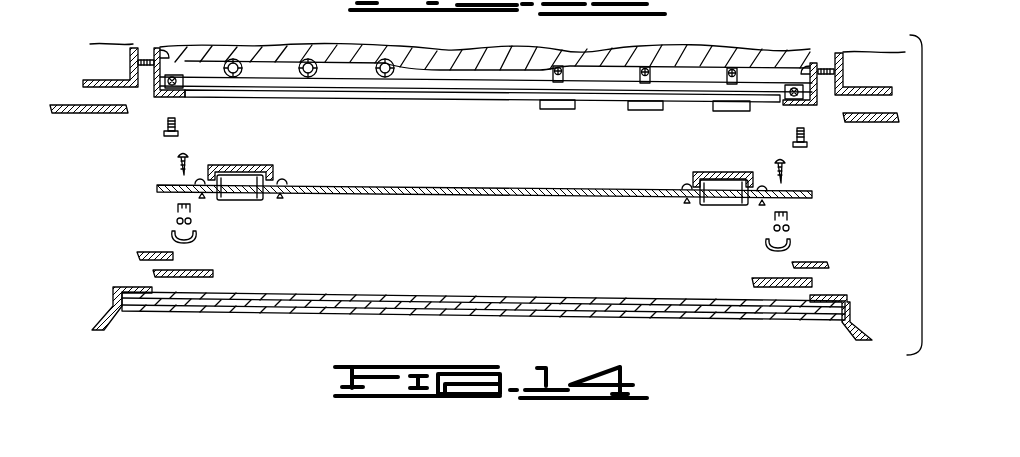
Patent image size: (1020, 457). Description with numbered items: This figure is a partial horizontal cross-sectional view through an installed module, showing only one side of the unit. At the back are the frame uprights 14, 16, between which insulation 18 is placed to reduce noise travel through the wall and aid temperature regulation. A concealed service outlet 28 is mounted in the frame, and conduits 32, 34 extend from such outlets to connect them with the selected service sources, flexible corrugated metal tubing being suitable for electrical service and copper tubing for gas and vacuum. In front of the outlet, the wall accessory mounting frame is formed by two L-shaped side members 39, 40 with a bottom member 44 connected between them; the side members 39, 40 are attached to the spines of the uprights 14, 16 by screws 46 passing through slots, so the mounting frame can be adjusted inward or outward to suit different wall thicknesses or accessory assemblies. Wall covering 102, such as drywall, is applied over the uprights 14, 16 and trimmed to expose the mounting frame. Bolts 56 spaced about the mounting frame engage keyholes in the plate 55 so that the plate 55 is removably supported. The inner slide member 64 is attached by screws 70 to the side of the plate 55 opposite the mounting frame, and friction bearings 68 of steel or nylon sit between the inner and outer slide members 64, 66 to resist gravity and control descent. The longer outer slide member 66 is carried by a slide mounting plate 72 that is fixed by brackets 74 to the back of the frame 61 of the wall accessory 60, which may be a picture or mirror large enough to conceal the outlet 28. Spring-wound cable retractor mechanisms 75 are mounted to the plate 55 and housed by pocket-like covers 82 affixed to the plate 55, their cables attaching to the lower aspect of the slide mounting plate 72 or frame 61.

The upright 14 is at (133, 48).
The upright 16 is at (840, 53).
The insulation 18 is at (713, 56).
The concealed service outlet 28 is at (645, 111).
The conduit 32 is at (387, 77).
The conduit 34 is at (552, 81).
The L-shaped side member 39 is at (173, 95).
The L-shaped side member 40 is at (803, 101).
The bottom member 44 is at (305, 97).
The screw 46 is at (163, 60).
The plate 55 is at (483, 197).
The bolt 56 is at (167, 138).
The wall accessory 60 is at (158, 314).
The frame 61 is at (104, 311).
The inner slide member 64 is at (177, 205).
The outer slide member 66 is at (197, 237).
The friction bearing 68 is at (173, 221).
The screw 70 is at (190, 152).
The slide mounting plate 72 is at (213, 270).
The bracket 74 is at (137, 252).
The spring-wound cable retractor mechanism 75 is at (243, 191).
The pocket-like cover 82 is at (250, 167).
The wall covering 102 is at (84, 114).